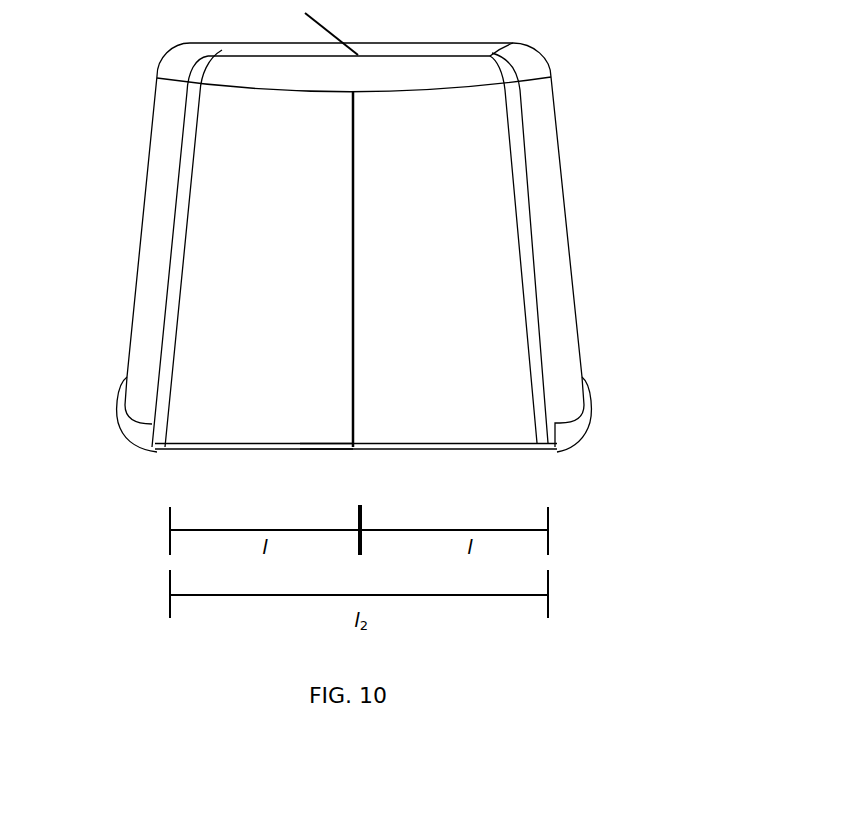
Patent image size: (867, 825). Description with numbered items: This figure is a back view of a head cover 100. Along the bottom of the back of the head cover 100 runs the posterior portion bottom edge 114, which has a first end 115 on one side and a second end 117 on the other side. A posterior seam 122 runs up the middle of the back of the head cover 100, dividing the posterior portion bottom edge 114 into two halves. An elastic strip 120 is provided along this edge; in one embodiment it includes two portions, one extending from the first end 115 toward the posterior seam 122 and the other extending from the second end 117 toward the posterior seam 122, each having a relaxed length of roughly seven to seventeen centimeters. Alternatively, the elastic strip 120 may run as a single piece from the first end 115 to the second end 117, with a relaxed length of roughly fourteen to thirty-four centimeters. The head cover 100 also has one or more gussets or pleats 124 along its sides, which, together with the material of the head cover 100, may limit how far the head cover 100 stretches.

The head cover 100 is at (656, 231).
The gussets and/or pleats 124 is at (200, 75).
The posterior seam 122 is at (353, 447).
The posterior portion bottom edge 114 is at (273, 449).
The elastic strip 120 is at (330, 449).
The first end of the posterior portion bottom edge 115 is at (160, 448).
The second end of the posterior portion bottom edge 117 is at (553, 447).